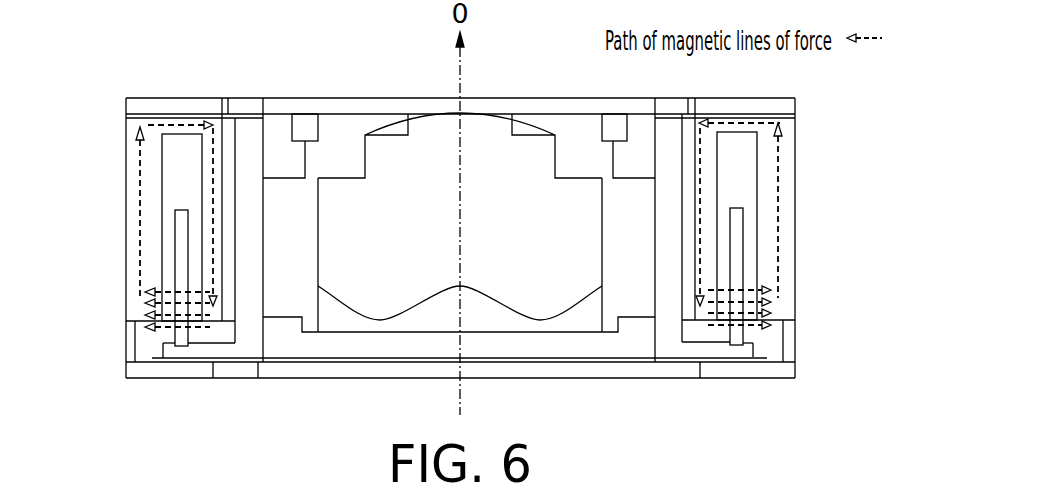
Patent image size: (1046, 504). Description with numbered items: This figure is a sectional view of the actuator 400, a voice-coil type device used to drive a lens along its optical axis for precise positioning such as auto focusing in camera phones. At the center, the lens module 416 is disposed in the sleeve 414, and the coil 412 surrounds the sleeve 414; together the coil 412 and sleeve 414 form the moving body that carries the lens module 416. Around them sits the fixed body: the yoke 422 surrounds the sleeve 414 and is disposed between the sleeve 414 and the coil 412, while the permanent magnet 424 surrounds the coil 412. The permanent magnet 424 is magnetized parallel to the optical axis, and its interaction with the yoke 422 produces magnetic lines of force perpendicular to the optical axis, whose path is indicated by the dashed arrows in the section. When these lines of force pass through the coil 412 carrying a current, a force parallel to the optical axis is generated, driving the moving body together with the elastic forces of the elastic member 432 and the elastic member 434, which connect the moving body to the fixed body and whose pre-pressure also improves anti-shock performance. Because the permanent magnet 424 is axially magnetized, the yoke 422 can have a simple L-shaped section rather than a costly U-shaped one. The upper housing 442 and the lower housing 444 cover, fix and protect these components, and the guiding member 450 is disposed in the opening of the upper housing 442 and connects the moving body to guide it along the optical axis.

The actuator 400 is at (779, 462).
The coil 412 is at (737, 335).
The sleeve 414 is at (672, 272).
The lens module 416 is at (643, 235).
The yoke 422 is at (128, 124).
The permanent magnet 424 is at (137, 210).
The elastic member 432 is at (208, 115).
The elastic member 434 is at (150, 362).
The upper housing 442 is at (190, 106).
The lower housing 444 is at (788, 368).
The guiding member 450 is at (578, 105).